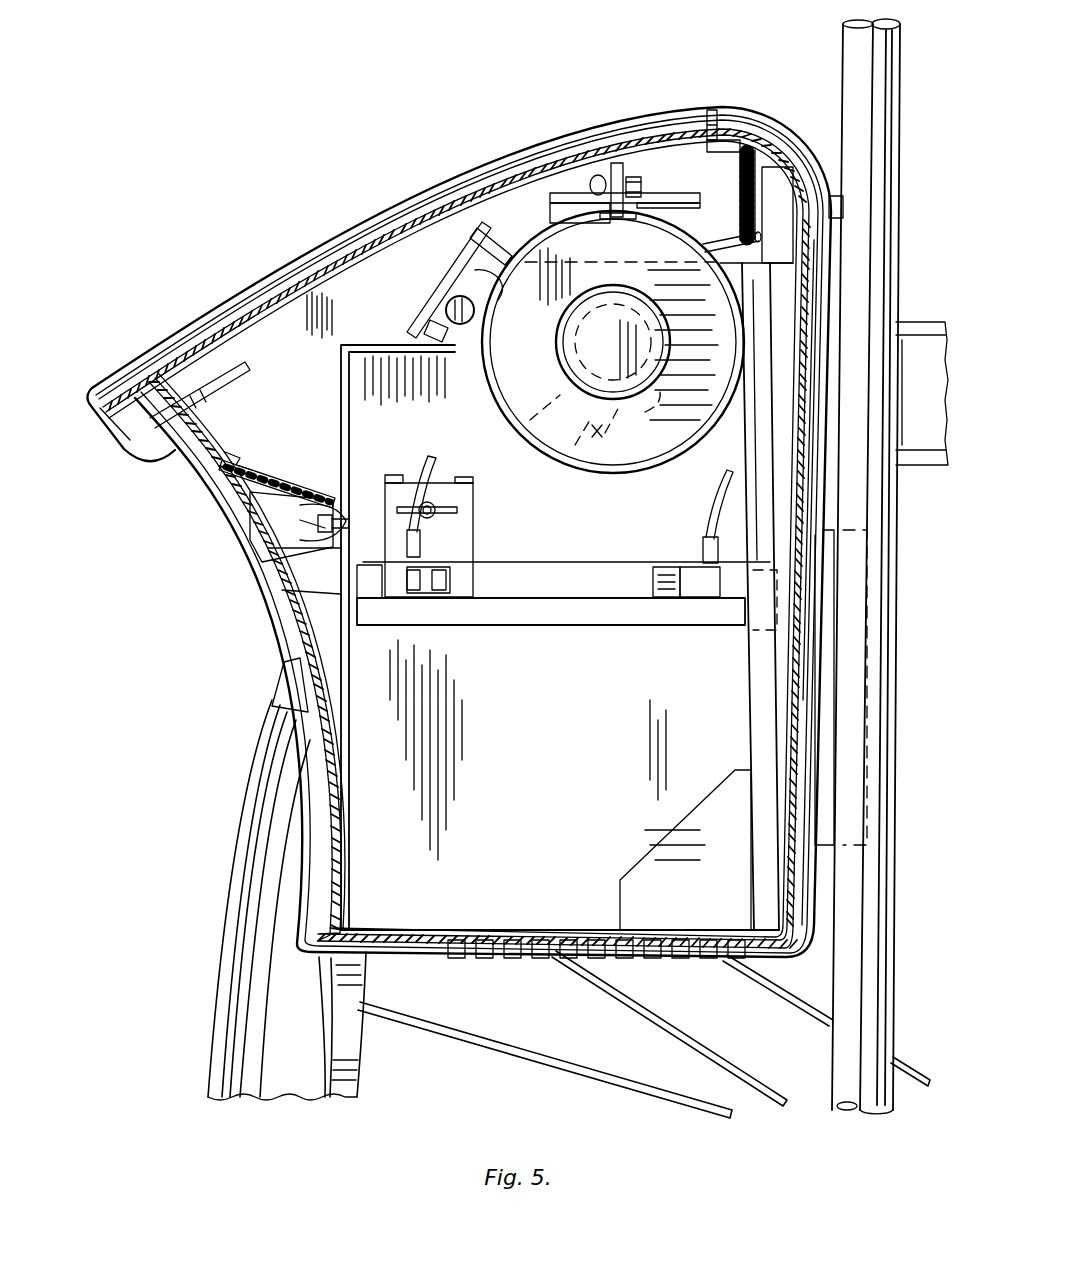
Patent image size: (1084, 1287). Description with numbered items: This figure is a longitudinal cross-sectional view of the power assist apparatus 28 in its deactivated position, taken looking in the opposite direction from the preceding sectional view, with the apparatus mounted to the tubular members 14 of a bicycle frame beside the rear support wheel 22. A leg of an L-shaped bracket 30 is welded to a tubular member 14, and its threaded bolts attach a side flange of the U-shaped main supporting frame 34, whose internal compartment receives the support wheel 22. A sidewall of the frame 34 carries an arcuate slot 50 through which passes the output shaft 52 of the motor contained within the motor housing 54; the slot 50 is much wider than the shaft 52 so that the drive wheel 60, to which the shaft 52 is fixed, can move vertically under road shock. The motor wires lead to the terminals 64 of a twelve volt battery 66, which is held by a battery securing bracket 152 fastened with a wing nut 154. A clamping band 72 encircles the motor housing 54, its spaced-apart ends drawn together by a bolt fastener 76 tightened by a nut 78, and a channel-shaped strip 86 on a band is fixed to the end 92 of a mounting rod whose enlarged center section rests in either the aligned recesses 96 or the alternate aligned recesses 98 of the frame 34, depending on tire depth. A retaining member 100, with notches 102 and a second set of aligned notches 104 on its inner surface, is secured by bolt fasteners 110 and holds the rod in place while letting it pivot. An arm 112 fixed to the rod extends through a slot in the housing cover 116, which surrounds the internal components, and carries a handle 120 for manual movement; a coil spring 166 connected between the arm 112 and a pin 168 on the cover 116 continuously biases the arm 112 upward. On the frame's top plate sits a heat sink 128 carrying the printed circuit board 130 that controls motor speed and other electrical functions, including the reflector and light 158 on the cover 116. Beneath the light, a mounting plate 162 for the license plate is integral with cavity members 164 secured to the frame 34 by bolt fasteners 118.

The tubular member 14 is at (843, 24).
The rear support wheel 22 is at (238, 836).
The power assist apparatus 28 is at (470, 101).
The L-shaped bracket 30 is at (772, 668).
The main supporting frame 34 is at (347, 345).
The arcuate slot 50 is at (603, 433).
The output shaft 52 is at (554, 338).
The motor housing 54 is at (498, 420).
The drive wheel 60 is at (660, 392).
The terminal 64 is at (460, 556).
The battery 66 is at (540, 722).
The clamping band 72 is at (492, 383).
The bolt fastener 76 is at (566, 193).
The nut 78 is at (619, 163).
The strip 86 is at (498, 327).
The end of mounting rod 92 is at (445, 310).
The aligned recesses 96 is at (440, 332).
The aligned recesses 98 is at (516, 255).
The retaining member 100 is at (374, 237).
The notches 102 is at (446, 295).
The aligned notches 104 is at (453, 192).
The bolt fasteners 110 is at (433, 210).
The arm 112 is at (711, 112).
The housing cover 116 is at (255, 300).
The bolt fasteners 118 is at (275, 530).
The handle 120 is at (835, 195).
The heat sink 128 is at (561, 195).
The printed circuit board 130 is at (701, 245).
The battery securing bracket 152 is at (467, 508).
The wing nut 154 is at (467, 515).
The reflector and light 158 is at (134, 447).
The mounting plate 162 is at (226, 516).
The cavity members 164 is at (263, 545).
The coil spring 166 is at (785, 142).
The pin 168 is at (734, 140).